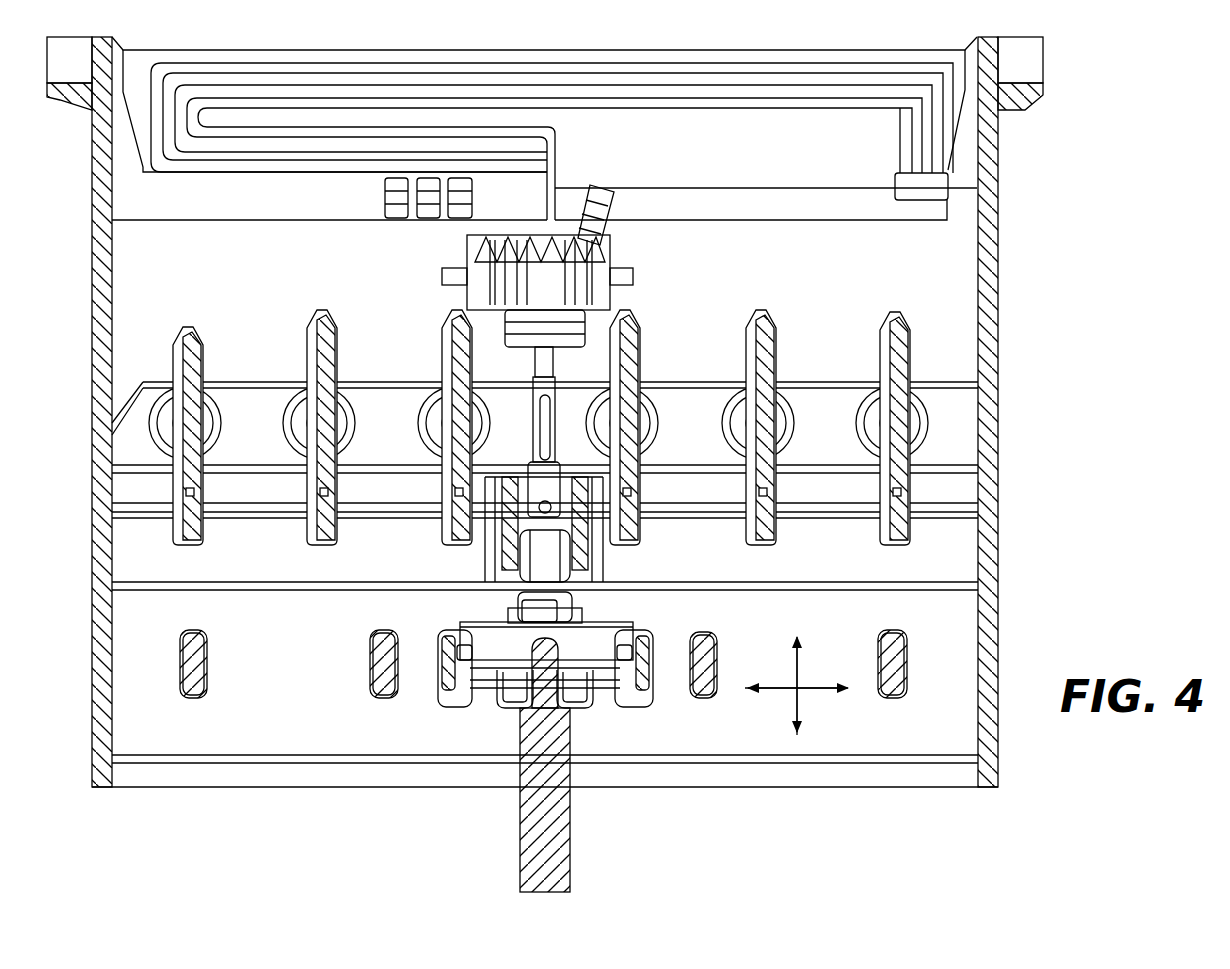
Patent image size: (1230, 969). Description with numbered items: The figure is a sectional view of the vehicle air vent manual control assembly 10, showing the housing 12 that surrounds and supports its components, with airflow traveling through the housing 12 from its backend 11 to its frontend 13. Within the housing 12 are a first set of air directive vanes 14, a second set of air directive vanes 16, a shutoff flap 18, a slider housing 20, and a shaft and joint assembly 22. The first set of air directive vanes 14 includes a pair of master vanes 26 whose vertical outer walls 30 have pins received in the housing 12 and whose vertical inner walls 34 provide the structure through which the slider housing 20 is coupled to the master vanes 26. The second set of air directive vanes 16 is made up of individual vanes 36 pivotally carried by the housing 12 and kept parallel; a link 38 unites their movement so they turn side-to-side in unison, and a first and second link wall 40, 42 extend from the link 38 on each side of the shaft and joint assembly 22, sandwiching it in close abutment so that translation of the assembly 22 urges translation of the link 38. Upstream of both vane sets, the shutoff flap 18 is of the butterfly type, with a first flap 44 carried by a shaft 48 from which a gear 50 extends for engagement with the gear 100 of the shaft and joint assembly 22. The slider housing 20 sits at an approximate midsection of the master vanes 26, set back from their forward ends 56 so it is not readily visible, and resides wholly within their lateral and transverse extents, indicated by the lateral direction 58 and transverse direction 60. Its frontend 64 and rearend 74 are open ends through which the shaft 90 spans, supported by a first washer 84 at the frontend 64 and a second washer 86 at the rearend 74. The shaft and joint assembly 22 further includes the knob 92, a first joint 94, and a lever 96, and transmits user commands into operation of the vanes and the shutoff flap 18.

The vehicle air vent manual control assembly 10 is at (345, 825).
The backend 11 is at (922, 50).
The housing 12 is at (125, 300).
The frontend 13 is at (955, 787).
The first set of air directive vanes 14 is at (860, 742).
The second set of air directive vanes 16 is at (915, 372).
The shutoff flap 18 is at (323, 220).
The slider housing 20 is at (622, 627).
The shaft and joint assembly 22 is at (520, 737).
The master vanes 26 is at (200, 727).
The vertical outer walls 30 is at (112, 727).
The vertical inner walls 34 is at (462, 660).
The vanes 36 is at (455, 345).
The link 38 is at (270, 490).
The first link wall 40 is at (505, 532).
The second link wall 42 is at (580, 535).
The first flap 44 is at (685, 122).
The shaft 48 is at (753, 205).
The gear 50 is at (612, 222).
The forward ends 56 is at (262, 762).
The lateral direction 58 is at (813, 686).
The transverse direction 60 is at (797, 706).
The frontend 64 is at (488, 690).
The rearend 74 is at (505, 620).
The first washer 84 is at (580, 705).
The second washer 86 is at (620, 600).
The shaft 90 is at (560, 732).
The knob 92 is at (570, 842).
The first joint 94 is at (545, 560).
The lever 96 is at (545, 432).
The gear 100 is at (557, 290).